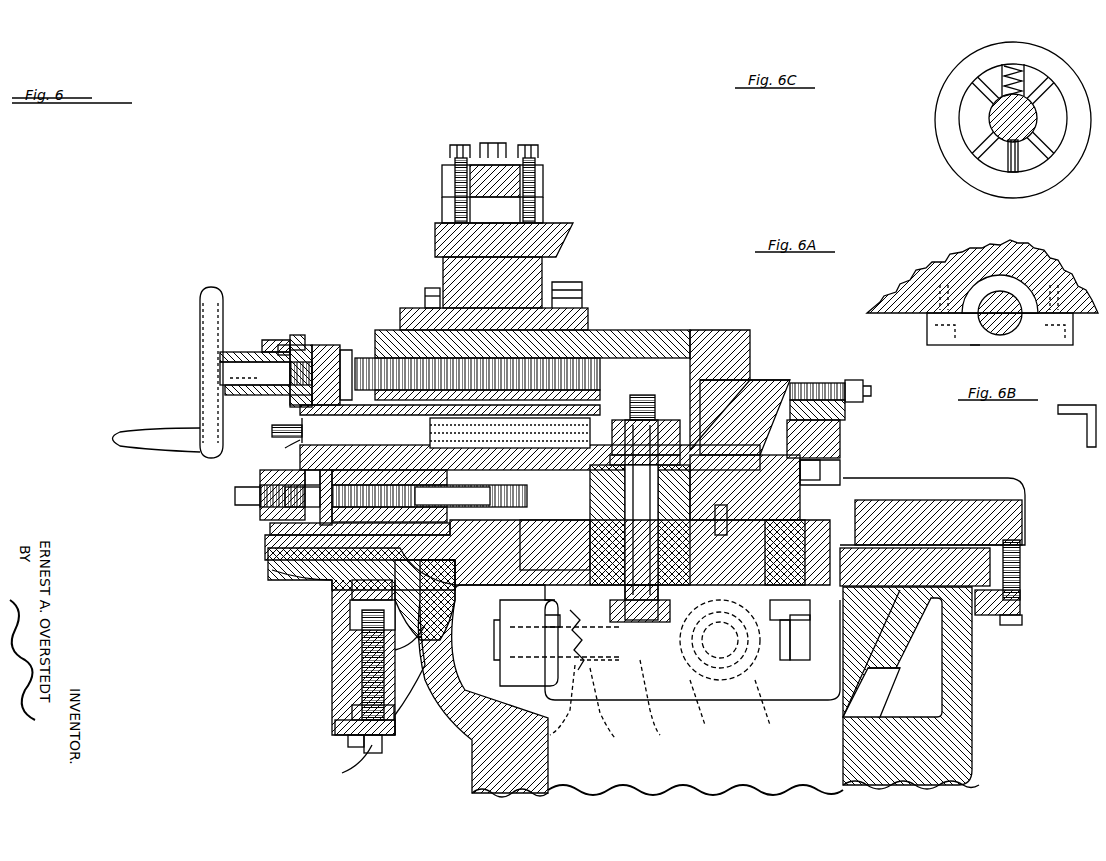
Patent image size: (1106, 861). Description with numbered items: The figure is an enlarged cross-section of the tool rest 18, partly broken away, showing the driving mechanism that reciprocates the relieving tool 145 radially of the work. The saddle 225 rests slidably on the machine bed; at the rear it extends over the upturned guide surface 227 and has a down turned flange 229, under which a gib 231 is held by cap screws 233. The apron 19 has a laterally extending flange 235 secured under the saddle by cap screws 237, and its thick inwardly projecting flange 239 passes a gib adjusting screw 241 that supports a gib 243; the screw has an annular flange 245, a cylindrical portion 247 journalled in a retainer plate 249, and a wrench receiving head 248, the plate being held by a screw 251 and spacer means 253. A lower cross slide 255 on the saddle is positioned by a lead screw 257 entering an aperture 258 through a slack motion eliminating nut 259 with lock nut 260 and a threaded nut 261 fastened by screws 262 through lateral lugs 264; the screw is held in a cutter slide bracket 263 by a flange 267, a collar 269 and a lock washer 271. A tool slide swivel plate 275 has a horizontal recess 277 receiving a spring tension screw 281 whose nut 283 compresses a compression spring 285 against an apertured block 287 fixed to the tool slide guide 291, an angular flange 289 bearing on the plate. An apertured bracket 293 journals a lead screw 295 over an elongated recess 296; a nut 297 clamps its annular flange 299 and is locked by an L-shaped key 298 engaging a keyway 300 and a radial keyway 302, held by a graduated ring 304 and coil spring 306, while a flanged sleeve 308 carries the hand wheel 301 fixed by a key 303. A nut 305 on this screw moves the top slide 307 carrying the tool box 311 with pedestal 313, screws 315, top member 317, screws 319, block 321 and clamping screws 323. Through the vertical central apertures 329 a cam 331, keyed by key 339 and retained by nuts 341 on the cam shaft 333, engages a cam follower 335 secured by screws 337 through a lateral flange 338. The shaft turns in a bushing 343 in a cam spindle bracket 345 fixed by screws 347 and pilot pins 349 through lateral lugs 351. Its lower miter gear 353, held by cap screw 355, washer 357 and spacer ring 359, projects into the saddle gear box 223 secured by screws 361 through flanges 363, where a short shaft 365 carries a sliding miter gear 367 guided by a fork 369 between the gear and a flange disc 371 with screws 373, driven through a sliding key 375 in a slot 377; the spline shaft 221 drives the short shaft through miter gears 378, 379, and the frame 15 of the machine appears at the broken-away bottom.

In FIG. 6, the machine frame 15 is at (472, 765).
In FIG. 6, the tool rest 18 is at (519, 205).
In FIG. 6, the apron 19 is at (332, 640).
In FIG. 6, the relieving tool 145 is at (573, 240).
In FIG. 6, the spline shaft 221 is at (707, 641).
In FIG. 6, the saddle gear box 223 is at (780, 695).
In FIG. 6, the saddle 225 is at (265, 547).
In FIG. 6, the guide surface 227 is at (1022, 518).
In FIG. 6, the down turned flange 229 is at (1020, 540).
In FIG. 6, the gib 231 is at (1020, 600).
In FIG. 6, the cap screws 233 is at (1018, 625).
In FIG. 6, the laterally extending flange 235 is at (268, 570).
In FIG. 6, the cap screws 237 is at (278, 588).
In FIG. 6, the inwardly projecting flange 239 is at (400, 700).
In FIG. 6, the gib adjusting screw 241 is at (362, 680).
In FIG. 6, the gib 243 is at (352, 590).
In FIG. 6, the annular flange 245 is at (352, 712).
In FIG. 6, the cylindrical portion 247 is at (364, 745).
In FIG. 6, the wrench receiving head 248 is at (331, 763).
In FIG. 6, the retainer plate 249 is at (345, 727).
In FIG. 6, the screw 251 is at (311, 747).
In FIG. 6, the spacer means 253 is at (335, 713).
In FIG. 6, the lower cross slide 255 is at (840, 470).
In FIG. 6A, the lower cross slide 255 is at (918, 272).
In FIG. 6, the lead screw 257 is at (240, 496).
In FIG. 6A, the lead screw 257 is at (1010, 333).
In FIG. 6, the aperture 258 is at (429, 496).
In FIG. 6, the slack motion eliminating nut 259 is at (346, 522).
In FIG. 6, the lock nut 260 is at (343, 475).
In FIG. 6, the threaded nut 261 is at (405, 600).
In FIG. 6A, the threaded nut 261 is at (960, 354).
In FIG. 6A, the screws 262 is at (1060, 280).
In FIG. 6, the cutter slide bracket 263 is at (270, 530).
In FIG. 6A, the lateral lugs 264 is at (927, 325).
In FIG. 6, the flange 267 is at (308, 497).
In FIG. 6, the collar 269 is at (305, 478).
In FIG. 6, the lock washer 271 is at (260, 480).
In FIG. 6, the tool slide swivel plate 275 is at (840, 440).
In FIG. 6, the horizontal recess 277 is at (285, 457).
In FIG. 6, the spring tension screw 281 is at (272, 431).
In FIG. 6, the block or nut 283 is at (630, 399).
In FIG. 6, the compression spring 285 is at (568, 397).
In FIG. 6, the apertured block 287 is at (310, 410).
In FIG. 6, the angular flange 289 is at (277, 447).
In FIG. 6, the tool slide guide 291 is at (845, 410).
In FIG. 6, the apertured bracket 293 is at (375, 345).
In FIG. 6, the lead screw 295 is at (352, 372).
In FIG. 6C, the lead screw 295 is at (1000, 135).
In FIG. 6, the elongated recess 296 is at (616, 350).
In FIG. 6, the nut 297 is at (300, 345).
In FIG. 6C, the nut 297 is at (980, 90).
In FIG. 6, the L-shaped key 298 is at (290, 400).
In FIG. 6C, the L-shaped key 298 is at (1018, 160).
In FIG. 6B, the L-shaped key 298 is at (1088, 436).
In FIG. 6, the annular flange 299 is at (330, 345).
In FIG. 6C, the keyway 300 is at (1035, 151).
In FIG. 6, the hand wheel 301 is at (200, 300).
In FIG. 6C, the radial keyway 302 is at (990, 112).
In FIG. 6, the key 303 is at (218, 364).
In FIG. 6, the graduated ring 304 is at (282, 345).
In FIG. 6C, the graduated ring 304 is at (968, 178).
In FIG. 6, the nut 305 is at (477, 381).
In FIG. 6, the coil spring 306 is at (432, 288).
In FIG. 6C, the coil spring 306 is at (1015, 65).
In FIG. 6, the top slide 307 is at (700, 335).
In FIG. 6, the flanged sleeve 308 is at (270, 340).
In FIG. 6, the tool box 311 is at (543, 212).
In FIG. 6, the pedestal 313 is at (588, 322).
In FIG. 6, the screws 315 is at (582, 295).
In FIG. 6, the top member 317 is at (543, 180).
In FIG. 6, the screws 319 is at (470, 150).
In FIG. 6, the block 321 is at (542, 270).
In FIG. 6, the screws 323 is at (540, 152).
In FIG. 6, the vertical central apertures 329 is at (620, 365).
In FIG. 6, the cam 331 is at (645, 420).
In FIG. 6, the cam shaft 333 is at (640, 510).
In FIG. 6, the cam follower 335 is at (800, 383).
In FIG. 6, the screws 337 is at (740, 390).
In FIG. 6, the lateral flange 338 is at (755, 378).
In FIG. 6, the key 339 is at (645, 483).
In FIG. 6, the nuts 341 is at (625, 418).
In FIG. 6, the bushing 343 is at (665, 500).
In FIG. 6, the cam spindle bracket 345 is at (703, 553).
In FIG. 6, the screws 347 is at (555, 543).
In FIG. 6, the pilot pins 349 is at (741, 553).
In FIG. 6, the lateral lugs 351 is at (747, 520).
In FIG. 6, the miter gear 353 is at (740, 570).
In FIG. 6, the cap screw 355 is at (641, 619).
In FIG. 6, the washer 357 is at (653, 645).
In FIG. 6, the spacer ring 359 is at (668, 591).
In FIG. 6, the screws 361 is at (800, 625).
In FIG. 6, the flanges 363 is at (810, 605).
In FIG. 6, the short shaft 365 is at (663, 702).
In FIG. 6, the miter gear 367 is at (614, 680).
In FIG. 6, the fork 369 is at (548, 540).
In FIG. 6, the flange disc 371 is at (573, 705).
In FIG. 6, the screws 373 is at (614, 706).
In FIG. 6, the sliding key 375 is at (588, 640).
In FIG. 6, the slot 377 is at (598, 645).
In FIG. 6, the miter gear 378 is at (721, 712).
In FIG. 6, the miter gear 379 is at (778, 712).